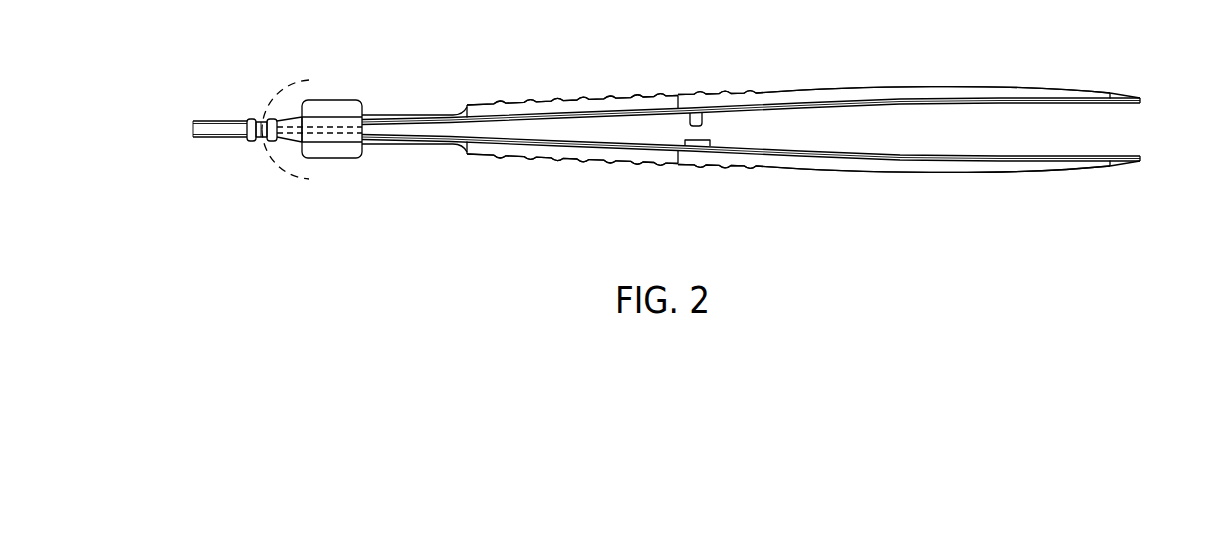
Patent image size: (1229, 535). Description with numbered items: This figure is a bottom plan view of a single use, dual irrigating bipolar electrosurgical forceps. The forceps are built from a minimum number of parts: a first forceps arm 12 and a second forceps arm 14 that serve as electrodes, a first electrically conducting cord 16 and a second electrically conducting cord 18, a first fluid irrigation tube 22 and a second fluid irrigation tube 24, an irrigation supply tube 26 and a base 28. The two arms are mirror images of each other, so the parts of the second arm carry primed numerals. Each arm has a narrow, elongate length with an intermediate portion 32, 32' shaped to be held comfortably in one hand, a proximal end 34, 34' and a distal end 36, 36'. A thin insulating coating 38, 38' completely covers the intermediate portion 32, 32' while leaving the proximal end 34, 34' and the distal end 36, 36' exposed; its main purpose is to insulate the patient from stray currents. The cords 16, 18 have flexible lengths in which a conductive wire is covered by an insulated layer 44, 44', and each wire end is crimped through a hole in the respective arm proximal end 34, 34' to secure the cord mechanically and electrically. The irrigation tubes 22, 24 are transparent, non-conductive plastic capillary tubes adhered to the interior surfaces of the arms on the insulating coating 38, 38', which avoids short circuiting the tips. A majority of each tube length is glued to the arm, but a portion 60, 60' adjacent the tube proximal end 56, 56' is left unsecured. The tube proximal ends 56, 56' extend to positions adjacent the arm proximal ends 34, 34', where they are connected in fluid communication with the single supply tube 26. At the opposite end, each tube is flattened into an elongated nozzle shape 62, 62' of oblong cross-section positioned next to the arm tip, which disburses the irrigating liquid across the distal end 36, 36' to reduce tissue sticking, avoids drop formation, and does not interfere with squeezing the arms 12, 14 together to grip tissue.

The first forceps arm 12 is at (839, 86).
The second forceps arm 14 is at (839, 173).
The first electrically conducting cord 16 is at (218, 118).
The second electrically conducting cord 18 is at (226, 140).
The first fluid irrigation tube 22 is at (924, 106).
The second fluid irrigation tube 24 is at (953, 151).
The irrigation supply tube 26 is at (228, 119).
The base 28 is at (349, 158).
The intermediate portion 32 is at (572, 80).
The intermediate portion of second arm 32' is at (572, 181).
The proximal end 34 is at (751, 96).
The proximal end of second arm 34' is at (751, 158).
The distal end 36 is at (1156, 81).
The distal end of second arm 36' is at (1158, 178).
The insulating coating 38 is at (894, 73).
The insulating coating of second arm 38' is at (894, 188).
The insulated layer 44 is at (194, 107).
The insulated layer of second cord 44' is at (194, 157).
The tube proximal end 56 is at (298, 98).
The tube proximal end of second tube 56' is at (300, 161).
The unsecured tube portion 60 is at (419, 91).
The unsecured tube portion of second tube 60' is at (426, 168).
The nozzle shape 62 is at (1141, 110).
The nozzle shape of second tube 62' is at (1143, 149).